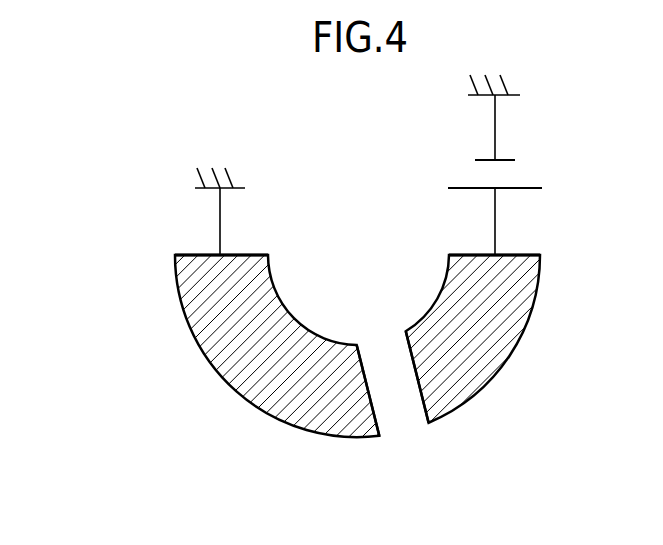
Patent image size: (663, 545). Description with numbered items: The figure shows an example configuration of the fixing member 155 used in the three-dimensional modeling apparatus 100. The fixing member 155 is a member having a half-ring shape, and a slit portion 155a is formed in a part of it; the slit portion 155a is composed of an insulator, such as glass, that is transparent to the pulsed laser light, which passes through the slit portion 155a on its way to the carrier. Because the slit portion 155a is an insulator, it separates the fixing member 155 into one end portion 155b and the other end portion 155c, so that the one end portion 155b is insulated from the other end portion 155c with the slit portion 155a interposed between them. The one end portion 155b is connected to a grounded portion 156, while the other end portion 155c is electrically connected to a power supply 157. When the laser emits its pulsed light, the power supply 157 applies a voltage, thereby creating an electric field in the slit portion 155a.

The three-dimensional modeling apparatus 100 is at (83, 181).
The fixing member 155 is at (199, 482).
The slit portion 155a is at (410, 417).
The one end portion 155b is at (200, 332).
The other end portion 155c is at (517, 330).
The grounded portion 156 is at (221, 212).
The power supply 157 is at (512, 157).